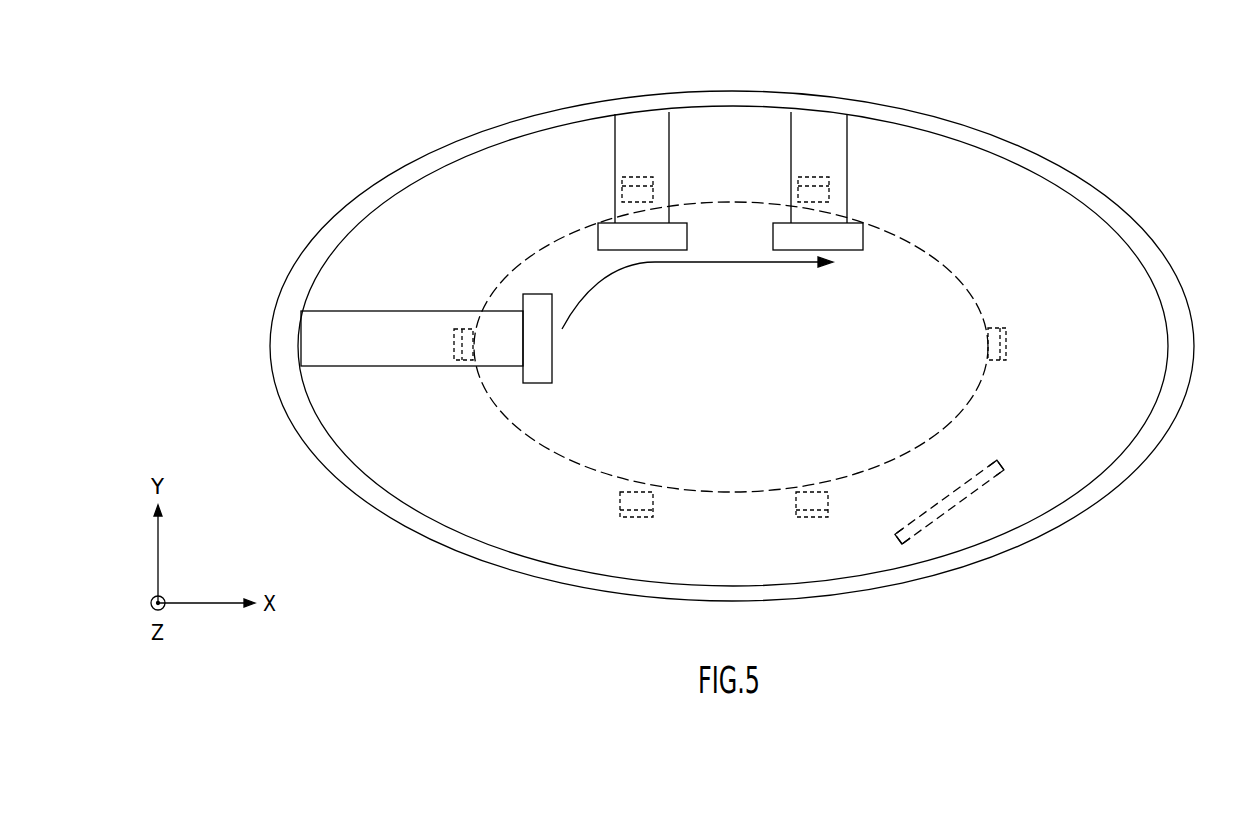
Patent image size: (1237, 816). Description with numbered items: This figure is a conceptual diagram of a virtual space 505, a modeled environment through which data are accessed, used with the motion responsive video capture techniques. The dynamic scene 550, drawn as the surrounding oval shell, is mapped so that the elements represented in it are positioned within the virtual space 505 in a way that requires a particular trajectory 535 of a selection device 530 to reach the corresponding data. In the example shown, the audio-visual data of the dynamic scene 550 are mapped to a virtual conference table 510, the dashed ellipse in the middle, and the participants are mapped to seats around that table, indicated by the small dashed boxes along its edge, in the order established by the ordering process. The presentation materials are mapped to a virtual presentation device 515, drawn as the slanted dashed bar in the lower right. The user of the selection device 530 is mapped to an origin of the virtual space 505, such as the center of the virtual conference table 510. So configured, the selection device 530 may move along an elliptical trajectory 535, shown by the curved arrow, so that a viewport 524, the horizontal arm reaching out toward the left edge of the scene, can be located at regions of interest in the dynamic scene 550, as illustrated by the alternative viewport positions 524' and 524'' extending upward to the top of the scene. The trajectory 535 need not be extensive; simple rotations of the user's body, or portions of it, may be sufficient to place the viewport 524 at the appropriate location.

The dynamic scene 550 is at (1158, 270).
The virtual space 505 is at (1101, 326).
The virtual conference table 510 is at (970, 413).
The viewport 524 is at (412, 317).
The viewport 524' is at (657, 146).
The viewport 524'' is at (839, 146).
The selection device 530 is at (543, 363).
The trajectory 535 is at (697, 263).
The virtual presentation device 515 is at (1008, 468).